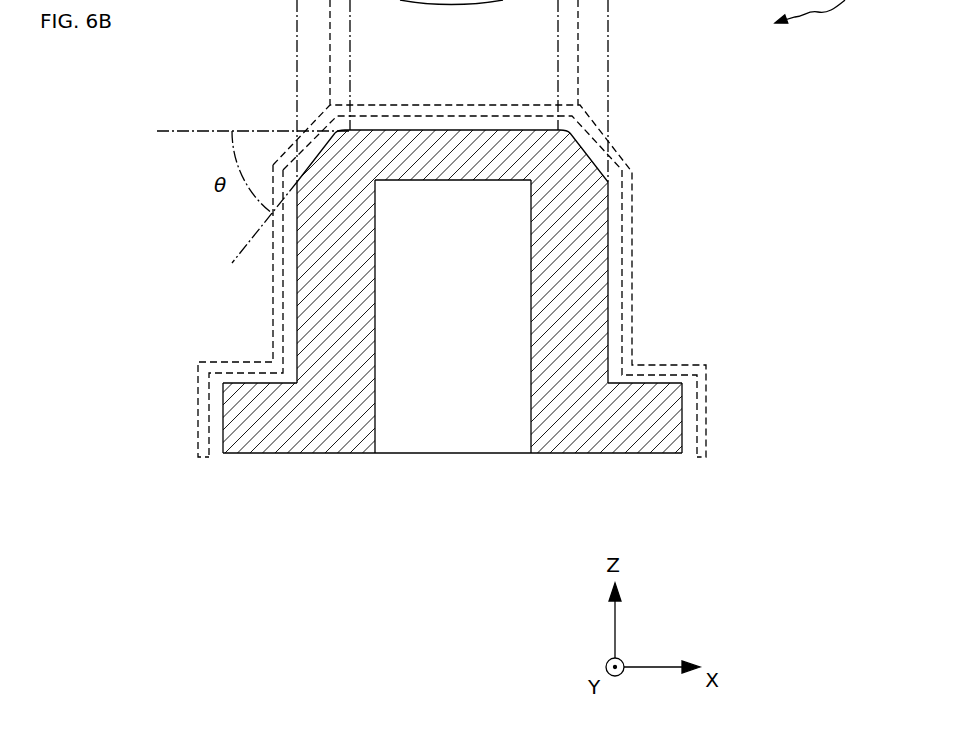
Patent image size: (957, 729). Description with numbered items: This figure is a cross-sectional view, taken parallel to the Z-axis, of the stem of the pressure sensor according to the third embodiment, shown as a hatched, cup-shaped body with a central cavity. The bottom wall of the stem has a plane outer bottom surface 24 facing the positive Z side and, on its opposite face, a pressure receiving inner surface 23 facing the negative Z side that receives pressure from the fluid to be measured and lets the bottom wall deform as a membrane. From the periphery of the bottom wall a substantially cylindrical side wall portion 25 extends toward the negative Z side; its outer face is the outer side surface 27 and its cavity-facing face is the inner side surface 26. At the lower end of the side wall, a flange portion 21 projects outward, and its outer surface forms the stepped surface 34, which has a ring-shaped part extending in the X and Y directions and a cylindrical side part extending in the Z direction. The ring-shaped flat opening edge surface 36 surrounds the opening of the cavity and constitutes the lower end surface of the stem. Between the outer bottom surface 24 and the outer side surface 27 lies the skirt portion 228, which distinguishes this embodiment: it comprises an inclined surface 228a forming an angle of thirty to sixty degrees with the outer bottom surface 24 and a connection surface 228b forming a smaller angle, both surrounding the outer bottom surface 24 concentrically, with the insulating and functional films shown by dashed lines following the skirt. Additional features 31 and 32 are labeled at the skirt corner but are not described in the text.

The flange portion 21 is at (245, 403).
The pressure receiving inner surface 23 is at (447, 181).
The outer bottom surface 24 is at (441, 130).
The side wall portion 25 is at (323, 318).
The inner side surface 26 is at (532, 395).
The outer side surface 27 is at (297, 266).
The corner portion 31 is at (558, 130).
The inclined surface 32 is at (608, 180).
The stepped surface 34 is at (647, 385).
The opening edge surface 36 is at (605, 453).
The skirt portion 228 is at (318, 157).
The inclined surface 228a is at (608, 153).
The connection surface 228b is at (603, 127).